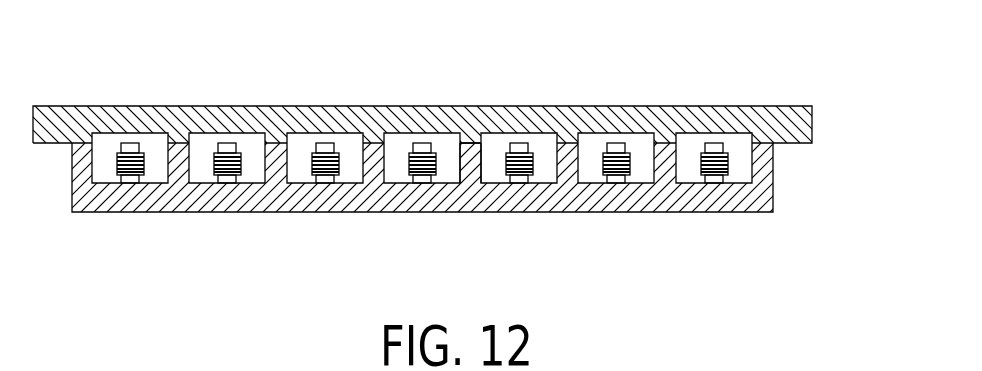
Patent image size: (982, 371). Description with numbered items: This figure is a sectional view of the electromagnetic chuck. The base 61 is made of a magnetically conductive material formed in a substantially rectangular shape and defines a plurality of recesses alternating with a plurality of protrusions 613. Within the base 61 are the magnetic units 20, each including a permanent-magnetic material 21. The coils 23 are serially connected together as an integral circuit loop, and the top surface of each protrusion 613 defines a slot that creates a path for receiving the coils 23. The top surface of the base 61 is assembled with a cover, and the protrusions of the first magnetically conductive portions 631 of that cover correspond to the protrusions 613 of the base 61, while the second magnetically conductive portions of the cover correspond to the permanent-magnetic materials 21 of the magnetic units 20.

The magnetic unit 20 is at (130, 151).
The permanent-magnetic material 21 is at (132, 182).
The coil 23 is at (144, 164).
The base 61 is at (717, 203).
The protrusion 613 is at (474, 160).
The first magnetically conductive portion 631 is at (812, 121).